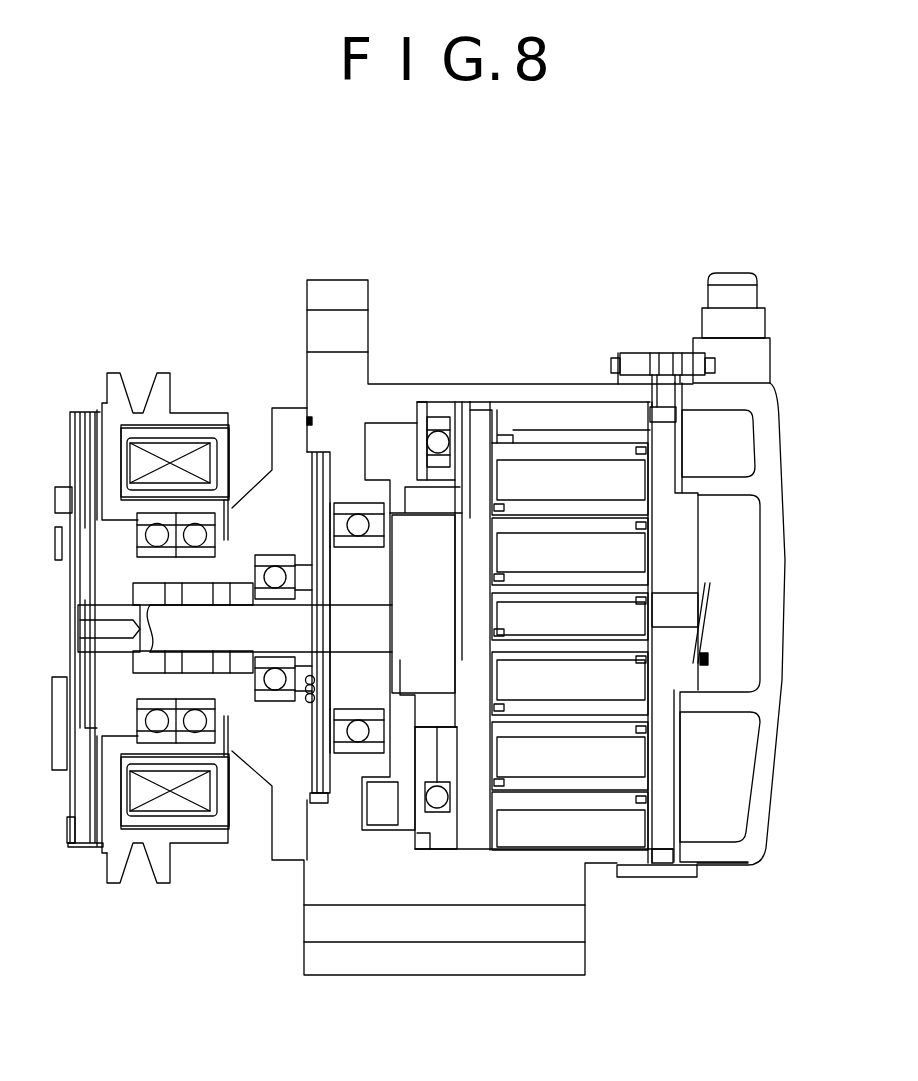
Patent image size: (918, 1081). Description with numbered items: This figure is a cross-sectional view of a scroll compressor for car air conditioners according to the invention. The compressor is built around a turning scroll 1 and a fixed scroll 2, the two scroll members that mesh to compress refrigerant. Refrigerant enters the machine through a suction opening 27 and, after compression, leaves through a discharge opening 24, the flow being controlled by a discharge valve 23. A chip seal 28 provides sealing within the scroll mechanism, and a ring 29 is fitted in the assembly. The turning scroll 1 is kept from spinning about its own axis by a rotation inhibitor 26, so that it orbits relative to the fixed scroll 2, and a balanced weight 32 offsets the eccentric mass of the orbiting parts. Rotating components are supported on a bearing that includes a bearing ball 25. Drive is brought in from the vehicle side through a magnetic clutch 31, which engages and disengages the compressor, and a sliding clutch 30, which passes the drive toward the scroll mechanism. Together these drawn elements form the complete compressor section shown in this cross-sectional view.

The turning scroll 1 is at (478, 675).
The fixed scroll 2 is at (603, 580).
The discharge valve 23 is at (784, 616).
The discharge opening 24 is at (678, 612).
The bearing ball 25 is at (440, 805).
The rotation inhibitor 26 is at (422, 835).
The suction opening 27 is at (593, 402).
The chip seal 28 is at (515, 433).
The ring 29 is at (428, 415).
The sliding clutch 30 is at (399, 527).
The magnetic clutch 31 is at (233, 340).
The balanced weight 32 is at (307, 800).